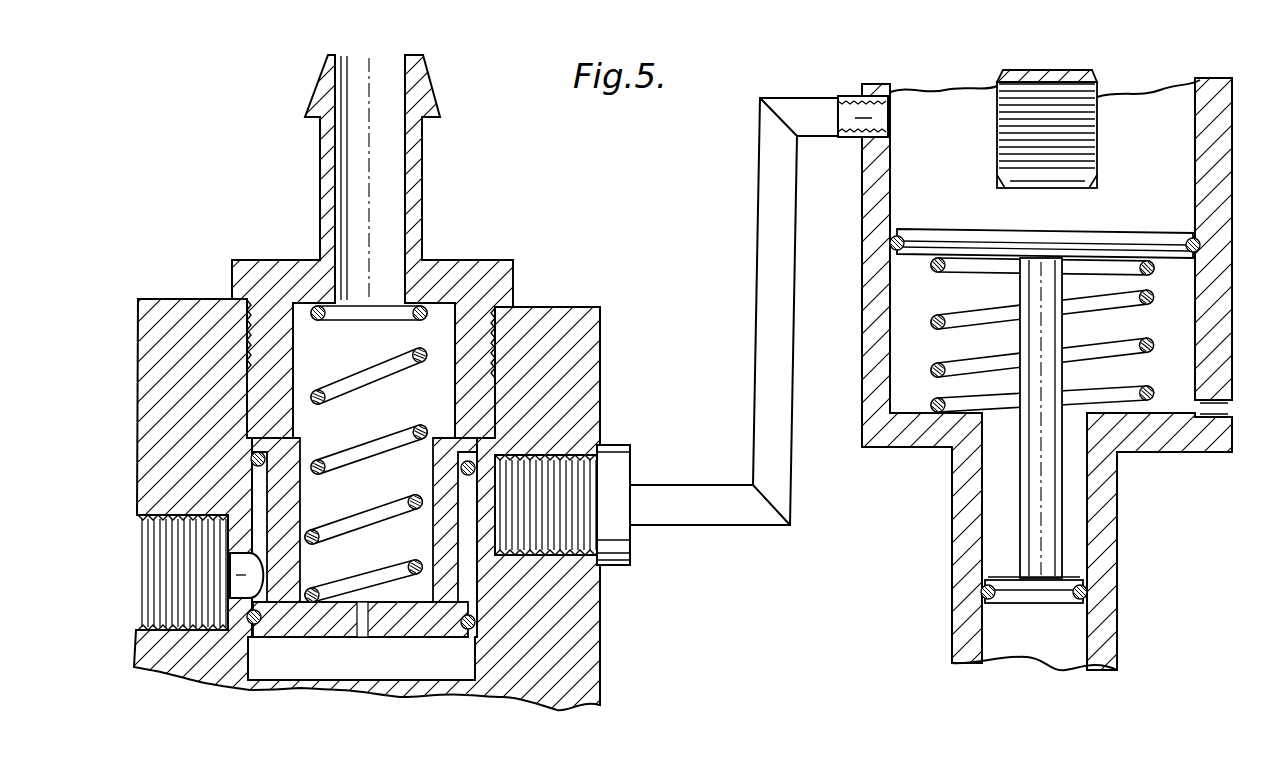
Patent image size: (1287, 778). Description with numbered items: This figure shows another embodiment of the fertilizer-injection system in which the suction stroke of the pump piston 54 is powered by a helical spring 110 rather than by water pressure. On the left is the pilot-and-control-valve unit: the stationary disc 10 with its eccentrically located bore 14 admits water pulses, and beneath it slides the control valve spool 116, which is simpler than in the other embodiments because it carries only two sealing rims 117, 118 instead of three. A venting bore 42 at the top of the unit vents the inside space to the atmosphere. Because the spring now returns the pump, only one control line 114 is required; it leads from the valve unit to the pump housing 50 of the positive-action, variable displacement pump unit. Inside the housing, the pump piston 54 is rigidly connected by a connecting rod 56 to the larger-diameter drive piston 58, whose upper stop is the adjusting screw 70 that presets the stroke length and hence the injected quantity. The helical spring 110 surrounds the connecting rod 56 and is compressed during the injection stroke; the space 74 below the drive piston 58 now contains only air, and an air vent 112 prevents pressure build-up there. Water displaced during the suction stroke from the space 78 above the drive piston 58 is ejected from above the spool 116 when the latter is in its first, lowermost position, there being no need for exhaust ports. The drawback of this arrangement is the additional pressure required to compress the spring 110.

The stationary disc 10 is at (402, 692).
The eccentric bore 14 is at (327, 677).
The venting bore 42 is at (388, 156).
The pump housing 50 is at (1228, 102).
The pump piston 54 is at (1057, 606).
The connecting rod 56 is at (1027, 466).
The drive piston 58 is at (1150, 230).
The adjusting screw 70 is at (1094, 99).
The space 74 is at (903, 312).
The water-filled space 78 is at (938, 105).
The helical spring 110 is at (1167, 398).
The air vent 112 is at (1233, 410).
The control line 114 is at (783, 484).
The control valve spool 116 is at (294, 508).
The sealing rim 117 is at (266, 461).
The sealing rim 118 is at (475, 621).